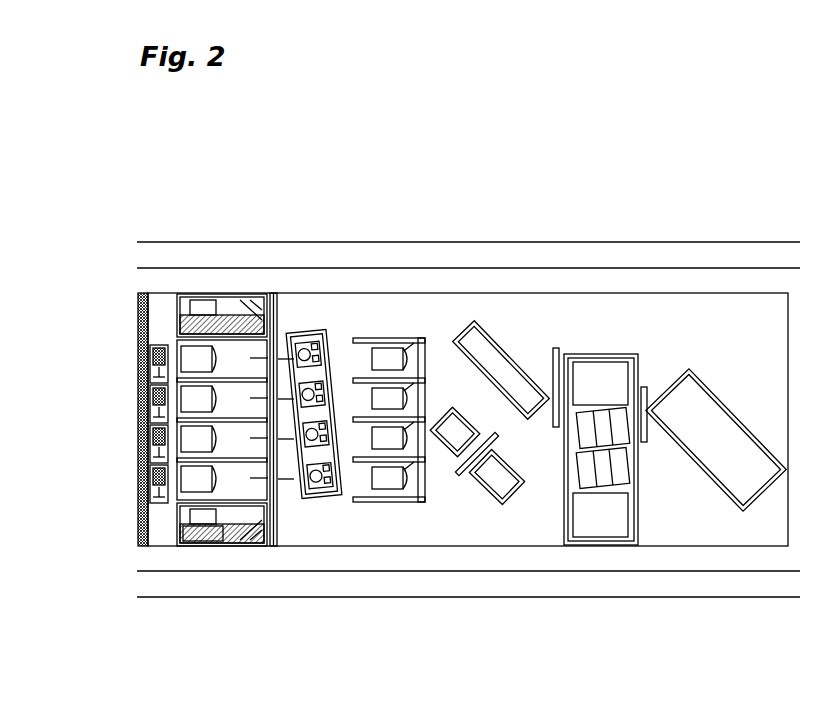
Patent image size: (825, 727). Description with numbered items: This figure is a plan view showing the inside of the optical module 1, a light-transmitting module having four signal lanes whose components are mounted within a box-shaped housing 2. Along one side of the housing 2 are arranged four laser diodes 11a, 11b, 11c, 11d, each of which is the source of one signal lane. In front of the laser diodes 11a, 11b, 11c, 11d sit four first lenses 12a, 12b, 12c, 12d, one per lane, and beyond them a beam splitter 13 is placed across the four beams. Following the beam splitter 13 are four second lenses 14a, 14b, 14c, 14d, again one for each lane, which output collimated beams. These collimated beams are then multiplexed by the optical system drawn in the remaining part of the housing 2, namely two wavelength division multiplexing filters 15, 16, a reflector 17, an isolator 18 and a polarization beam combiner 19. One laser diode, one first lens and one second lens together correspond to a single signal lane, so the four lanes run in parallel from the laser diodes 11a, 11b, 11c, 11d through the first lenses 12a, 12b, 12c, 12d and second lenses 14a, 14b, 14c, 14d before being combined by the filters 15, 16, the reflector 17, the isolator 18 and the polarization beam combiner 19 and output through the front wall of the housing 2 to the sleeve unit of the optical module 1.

The optical module 1 is at (642, 130).
The housing 2 is at (690, 252).
The laser diode 11a is at (150, 360).
The laser diode 11b is at (150, 400).
The laser diode 11c is at (150, 440).
The laser diode 11d is at (150, 480).
The first lens 12a is at (225, 325).
The first lens 12b is at (218, 402).
The first lens 12c is at (226, 340).
The first lens 12d is at (215, 505).
The beam splitter 13 is at (322, 330).
The second lens 14a is at (423, 353).
The second lens 14b is at (433, 377).
The second lens 14c is at (425, 467).
The second lens 14d is at (420, 470).
The wavelength division multiplexing filter 15 is at (453, 440).
The wavelength division multiplexing filter 16 is at (503, 478).
The reflector 17 is at (488, 355).
The isolator 18 is at (598, 375).
The polarization beam combiner 19 is at (707, 450).